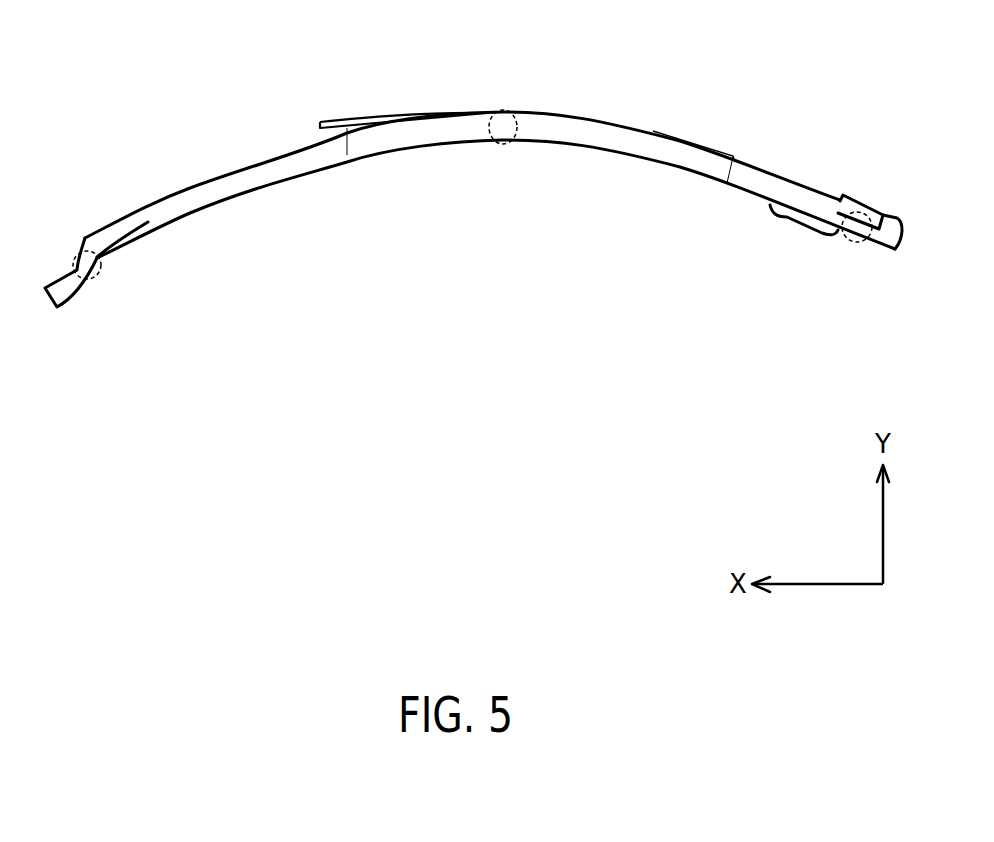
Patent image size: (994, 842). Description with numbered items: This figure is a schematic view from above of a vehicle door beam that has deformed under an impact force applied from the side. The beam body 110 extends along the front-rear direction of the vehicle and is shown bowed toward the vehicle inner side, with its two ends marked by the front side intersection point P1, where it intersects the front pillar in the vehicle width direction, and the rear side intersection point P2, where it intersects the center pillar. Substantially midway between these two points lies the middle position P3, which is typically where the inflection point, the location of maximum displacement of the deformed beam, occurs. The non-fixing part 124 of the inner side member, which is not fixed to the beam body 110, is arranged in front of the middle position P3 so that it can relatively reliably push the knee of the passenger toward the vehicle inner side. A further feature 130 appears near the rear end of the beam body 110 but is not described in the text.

The beam body 110 is at (243, 183).
The non-fixing part 124 is at (334, 123).
The end portion 130 is at (730, 172).
The front side intersection point P1 is at (82, 247).
The rear side intersection point P2 is at (862, 202).
The middle position P3 is at (503, 108).